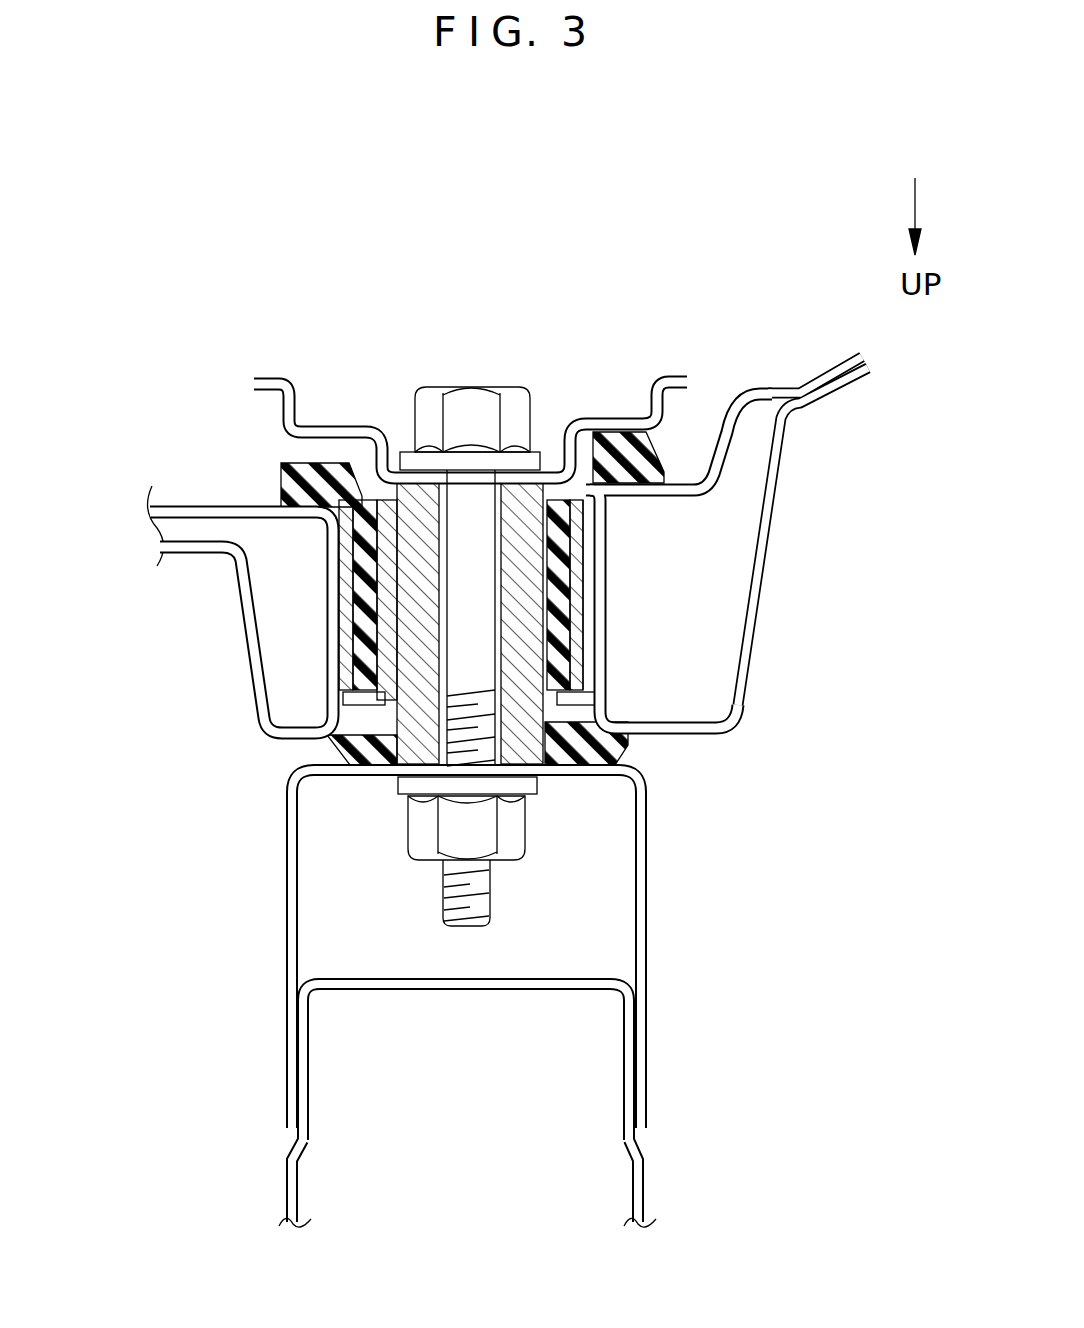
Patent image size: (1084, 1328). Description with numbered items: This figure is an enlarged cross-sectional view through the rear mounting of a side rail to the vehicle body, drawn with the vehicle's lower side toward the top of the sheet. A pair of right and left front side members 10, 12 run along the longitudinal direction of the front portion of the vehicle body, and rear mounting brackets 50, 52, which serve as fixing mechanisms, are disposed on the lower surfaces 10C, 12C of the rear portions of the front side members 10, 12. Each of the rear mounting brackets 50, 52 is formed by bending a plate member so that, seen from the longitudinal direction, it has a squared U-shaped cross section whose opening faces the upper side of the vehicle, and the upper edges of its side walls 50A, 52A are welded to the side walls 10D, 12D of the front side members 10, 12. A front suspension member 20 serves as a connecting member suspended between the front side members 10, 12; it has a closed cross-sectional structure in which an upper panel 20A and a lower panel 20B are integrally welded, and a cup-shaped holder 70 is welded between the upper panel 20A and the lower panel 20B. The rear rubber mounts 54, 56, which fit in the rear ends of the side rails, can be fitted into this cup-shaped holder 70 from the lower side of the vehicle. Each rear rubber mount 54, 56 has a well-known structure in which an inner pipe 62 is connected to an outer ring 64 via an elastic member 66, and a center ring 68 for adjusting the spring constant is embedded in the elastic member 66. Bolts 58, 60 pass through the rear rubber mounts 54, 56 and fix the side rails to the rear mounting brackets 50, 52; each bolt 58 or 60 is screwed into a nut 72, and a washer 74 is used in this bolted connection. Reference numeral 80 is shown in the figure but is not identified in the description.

The front side member 10 is at (480, 1078).
The front side member 12 is at (480, 1078).
The lower surface 10C is at (556, 964).
The lower surface 12C is at (577, 980).
The side wall 10D is at (480, 1183).
The side wall 12D is at (646, 1187).
The front suspension member 20 is at (733, 489).
The upper panel 20A is at (776, 488).
The lower panel 20B is at (752, 393).
The rear mounting bracket 50 is at (438, 949).
The rear mounting bracket 52 is at (438, 949).
The side wall 50A is at (438, 1059).
The side wall 52A is at (646, 1050).
The rear rubber mount 54 is at (380, 590).
The rear rubber mount 56 is at (265, 463).
The bolt 58 is at (527, 627).
The bolt 60 is at (523, 418).
The inner pipe 62 is at (421, 603).
The outer ring 64 is at (594, 614).
The elastic member 66 is at (594, 648).
The center ring 68 is at (609, 553).
The cup-shaped holder 70 is at (329, 608).
The nut 72 is at (514, 834).
The washer 74 is at (288, 378).
The washer 80 is at (478, 790).